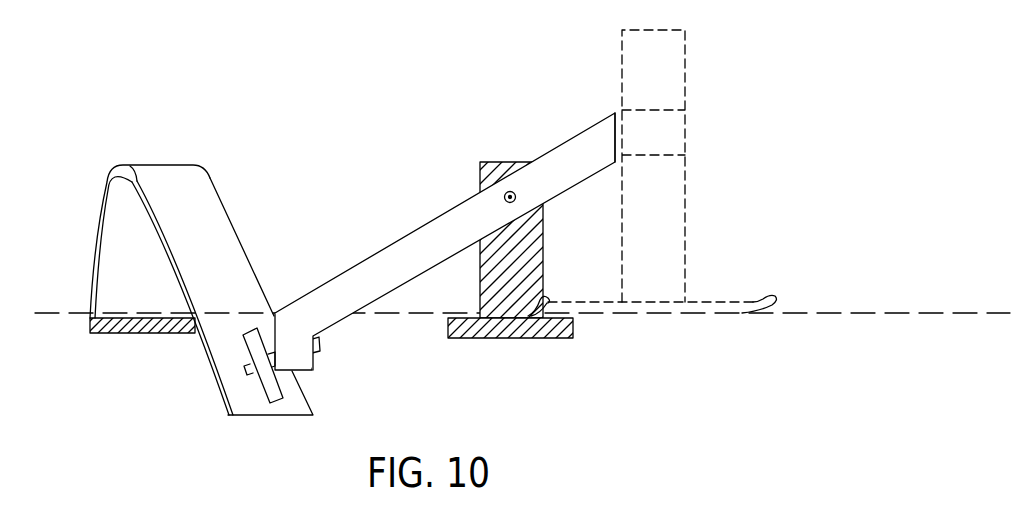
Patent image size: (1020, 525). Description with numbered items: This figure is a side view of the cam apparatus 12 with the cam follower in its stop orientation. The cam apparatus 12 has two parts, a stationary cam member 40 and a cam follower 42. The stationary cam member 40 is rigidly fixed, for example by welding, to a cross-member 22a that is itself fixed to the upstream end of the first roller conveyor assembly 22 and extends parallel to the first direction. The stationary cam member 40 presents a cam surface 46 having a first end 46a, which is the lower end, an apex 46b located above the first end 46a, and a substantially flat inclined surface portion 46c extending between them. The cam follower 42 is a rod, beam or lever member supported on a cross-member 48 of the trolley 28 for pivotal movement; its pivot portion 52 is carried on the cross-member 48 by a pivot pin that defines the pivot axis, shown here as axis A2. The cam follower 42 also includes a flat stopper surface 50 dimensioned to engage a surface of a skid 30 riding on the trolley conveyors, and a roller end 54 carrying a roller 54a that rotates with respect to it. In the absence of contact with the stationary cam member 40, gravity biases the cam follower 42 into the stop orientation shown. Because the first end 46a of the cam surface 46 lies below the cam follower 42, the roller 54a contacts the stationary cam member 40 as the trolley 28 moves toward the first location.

The cam apparatus 12 is at (408, 154).
The first roller conveyor assembly 22 is at (67, 313).
The cross-member 22a is at (150, 328).
The trolley 28 is at (793, 312).
The skid 30 is at (688, 62).
The stationary cam member 40 is at (176, 163).
The cam follower 42 is at (398, 237).
The cam surface 46 is at (210, 284).
The first end 46a is at (298, 403).
The apex 46b is at (148, 164).
The inclined surface portion 46c is at (225, 262).
The cross-member 48 is at (533, 332).
The stopper surface 50 is at (615, 135).
The pivot portion 52 is at (492, 208).
The roller end 54 is at (299, 382).
The roller 54a is at (272, 388).
The pivot axis A2 is at (509, 191).